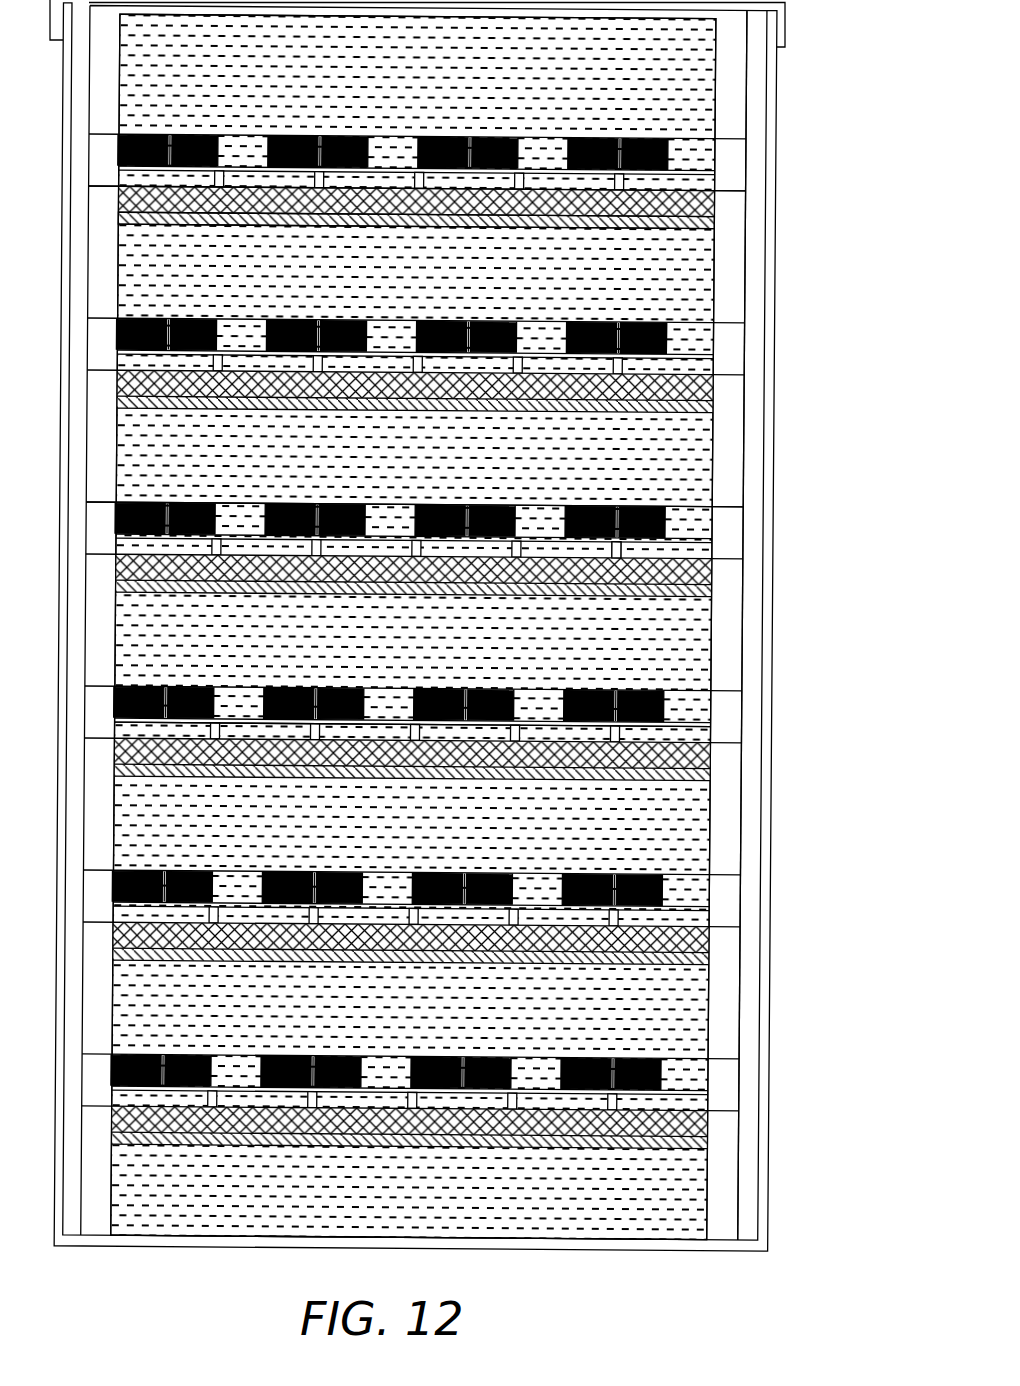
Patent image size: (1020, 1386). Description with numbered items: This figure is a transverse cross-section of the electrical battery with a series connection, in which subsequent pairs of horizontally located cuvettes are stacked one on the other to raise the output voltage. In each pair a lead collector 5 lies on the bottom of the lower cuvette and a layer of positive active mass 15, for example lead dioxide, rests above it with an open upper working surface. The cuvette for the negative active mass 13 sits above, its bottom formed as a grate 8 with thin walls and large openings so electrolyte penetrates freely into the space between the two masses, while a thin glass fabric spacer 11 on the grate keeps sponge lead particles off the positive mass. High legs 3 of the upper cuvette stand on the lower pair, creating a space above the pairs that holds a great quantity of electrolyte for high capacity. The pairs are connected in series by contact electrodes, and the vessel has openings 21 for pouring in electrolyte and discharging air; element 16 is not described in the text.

The high legs 3 is at (725, 301).
The collector 5 is at (637, 222).
The grate 8 is at (613, 546).
The spacer 11 is at (673, 332).
The negative active mass 13 is at (655, 507).
The positive active mass 15 is at (670, 190).
The intermediate plate 16 is at (544, 724).
The openings 21 is at (552, 999).